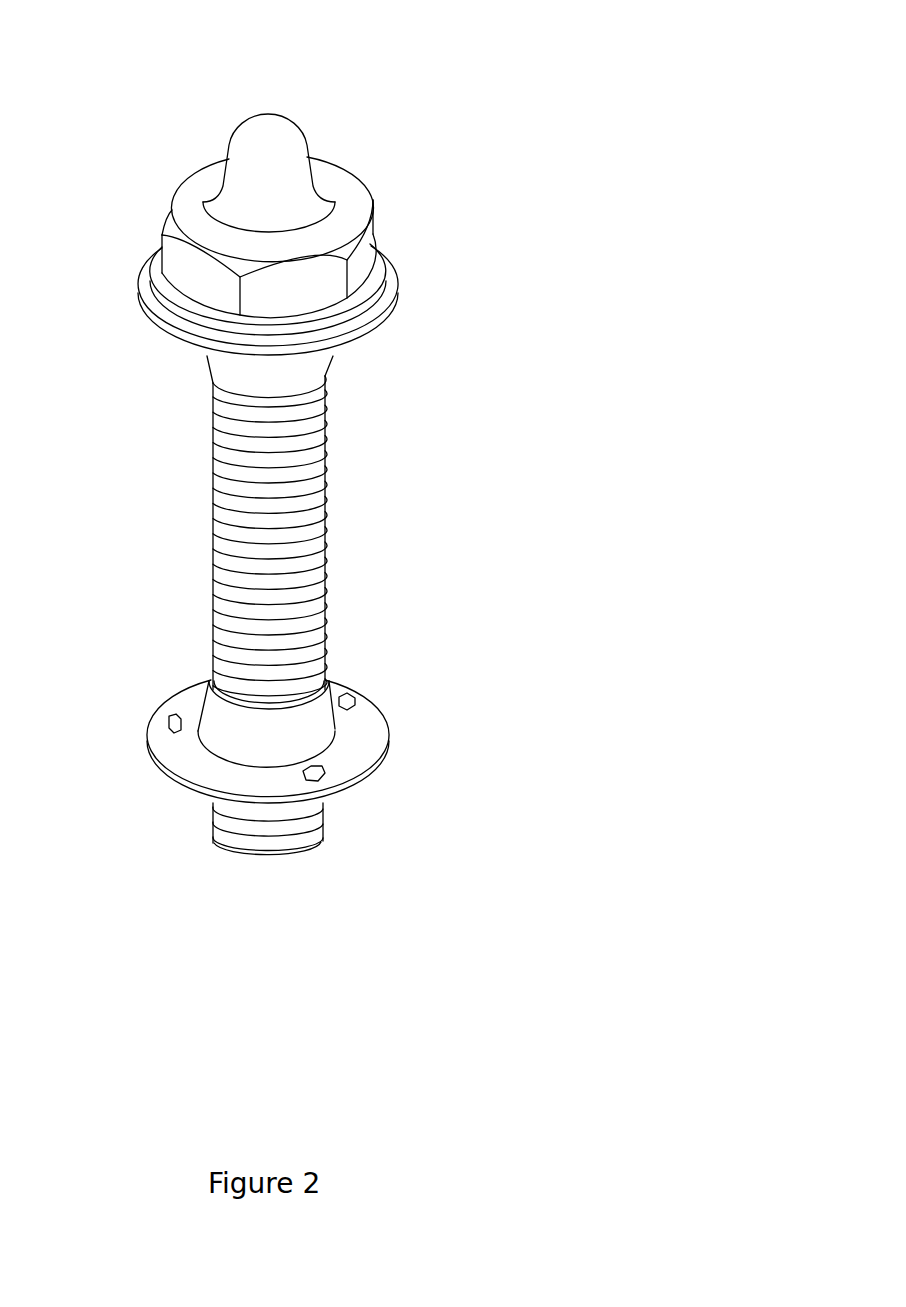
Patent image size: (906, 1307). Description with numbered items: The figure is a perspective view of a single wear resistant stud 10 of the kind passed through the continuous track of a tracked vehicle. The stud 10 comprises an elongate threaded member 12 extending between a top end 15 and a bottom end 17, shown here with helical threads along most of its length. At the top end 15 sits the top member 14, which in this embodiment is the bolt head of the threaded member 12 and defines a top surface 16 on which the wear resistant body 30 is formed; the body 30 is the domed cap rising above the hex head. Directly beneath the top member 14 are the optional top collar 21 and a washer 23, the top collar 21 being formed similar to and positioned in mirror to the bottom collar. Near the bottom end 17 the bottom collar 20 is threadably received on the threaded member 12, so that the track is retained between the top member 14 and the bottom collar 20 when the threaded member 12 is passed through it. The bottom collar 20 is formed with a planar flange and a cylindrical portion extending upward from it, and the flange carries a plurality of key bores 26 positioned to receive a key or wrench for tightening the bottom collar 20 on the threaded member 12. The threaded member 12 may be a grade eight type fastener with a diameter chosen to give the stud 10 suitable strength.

The wear resistant stud 10 is at (446, 80).
The elongate threaded member 12 is at (326, 488).
The top member 14 is at (374, 214).
The top end 15 is at (190, 352).
The top surface 16 is at (188, 194).
The bottom end 17 is at (203, 835).
The bottom collar 20 is at (389, 748).
The top collar 21 is at (387, 300).
The washer 23 is at (152, 262).
The key bores 26 is at (173, 713).
The wear resistant body 30 is at (268, 113).